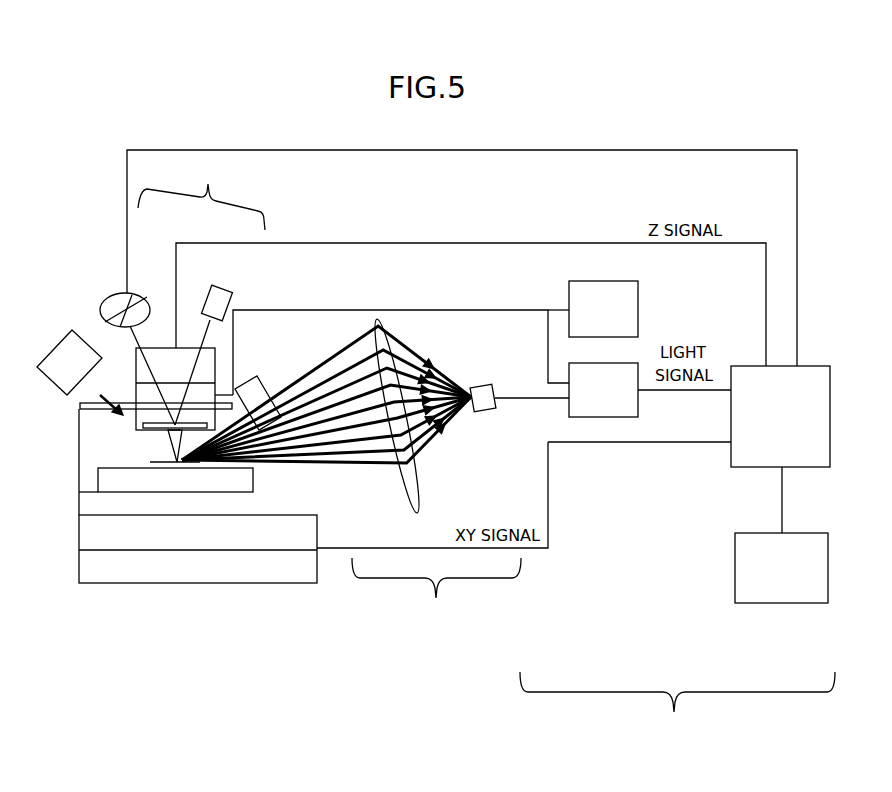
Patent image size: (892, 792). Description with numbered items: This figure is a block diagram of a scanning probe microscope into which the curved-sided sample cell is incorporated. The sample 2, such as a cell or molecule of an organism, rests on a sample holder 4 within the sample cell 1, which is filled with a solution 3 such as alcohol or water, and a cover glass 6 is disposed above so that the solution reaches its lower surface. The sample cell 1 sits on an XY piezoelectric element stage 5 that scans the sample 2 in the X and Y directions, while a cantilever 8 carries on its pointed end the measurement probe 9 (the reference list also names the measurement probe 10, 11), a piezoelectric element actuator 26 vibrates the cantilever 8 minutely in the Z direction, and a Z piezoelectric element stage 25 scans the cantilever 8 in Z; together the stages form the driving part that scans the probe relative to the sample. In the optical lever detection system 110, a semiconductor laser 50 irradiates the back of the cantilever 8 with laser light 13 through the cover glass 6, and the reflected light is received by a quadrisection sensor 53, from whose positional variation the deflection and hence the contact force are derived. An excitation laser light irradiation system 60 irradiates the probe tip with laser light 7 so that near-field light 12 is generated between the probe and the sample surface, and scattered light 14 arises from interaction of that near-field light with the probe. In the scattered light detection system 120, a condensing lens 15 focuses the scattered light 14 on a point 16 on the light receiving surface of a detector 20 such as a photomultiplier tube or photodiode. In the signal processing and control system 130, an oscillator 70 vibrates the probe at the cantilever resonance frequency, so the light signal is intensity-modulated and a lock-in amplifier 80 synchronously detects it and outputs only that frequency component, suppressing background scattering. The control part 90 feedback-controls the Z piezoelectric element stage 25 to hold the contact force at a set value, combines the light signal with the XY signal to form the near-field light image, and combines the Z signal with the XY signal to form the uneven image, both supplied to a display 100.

The sample cell 1 is at (272, 470).
The sample 2 is at (180, 467).
The solution 3 is at (147, 460).
The sample holder 4 is at (253, 492).
The XY piezoelectric element stage 5 is at (212, 583).
The cover glass 6 is at (128, 400).
The laser light 7 is at (80, 407).
The cantilever 8 is at (98, 470).
The measurement probe 9 is at (143, 458).
The measurement probe 10 is at (79, 552).
The measurement probe 11 is at (80, 583).
The near-field light 12 is at (170, 460).
The laser light 13 is at (205, 338).
The scattered light 14 is at (357, 462).
The condensing lens 15 is at (422, 482).
The point 16 is at (481, 412).
The detector 20 is at (480, 385).
The Z piezoelectric element stage 25 is at (216, 367).
The piezoelectric element actuator 26 is at (79, 447).
The semiconductor laser 50 is at (230, 297).
The quadrisection sensor 53 is at (108, 300).
The excitation laser light irradiation system 60 is at (58, 338).
The oscillator 70 is at (638, 315).
The lock-in amplifier 80 is at (638, 402).
The control part 90 is at (741, 466).
The display 100 is at (750, 603).
The optical lever detection system 110 is at (201, 191).
The scattered light detection system 120 is at (436, 596).
The signal processing and control system 130 is at (677, 707).